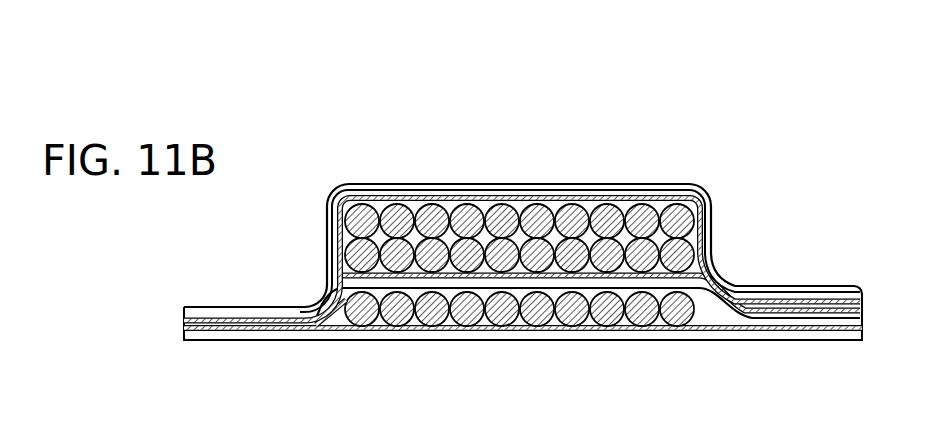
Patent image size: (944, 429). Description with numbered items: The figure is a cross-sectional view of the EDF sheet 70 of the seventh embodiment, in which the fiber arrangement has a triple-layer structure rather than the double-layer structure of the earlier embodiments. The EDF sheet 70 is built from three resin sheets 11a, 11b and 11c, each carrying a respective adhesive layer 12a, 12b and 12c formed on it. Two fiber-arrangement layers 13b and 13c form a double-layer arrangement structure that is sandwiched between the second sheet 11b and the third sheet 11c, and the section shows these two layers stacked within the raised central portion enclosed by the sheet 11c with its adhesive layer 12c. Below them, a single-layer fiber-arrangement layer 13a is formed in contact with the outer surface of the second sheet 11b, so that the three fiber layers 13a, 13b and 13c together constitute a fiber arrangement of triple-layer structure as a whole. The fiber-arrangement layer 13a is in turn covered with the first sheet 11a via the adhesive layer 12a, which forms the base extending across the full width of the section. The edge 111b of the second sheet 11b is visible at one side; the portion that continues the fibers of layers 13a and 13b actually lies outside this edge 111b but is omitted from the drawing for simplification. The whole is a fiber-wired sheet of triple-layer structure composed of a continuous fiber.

The EDF sheet 70 is at (720, 86).
The resin sheet 11a is at (355, 340).
The resin sheet 11b is at (807, 332).
The resin sheet 11c is at (712, 224).
The edge of second sheet 111b is at (340, 276).
The adhesive layer 12a is at (283, 333).
The adhesive layer 12b is at (757, 332).
The adhesive layer 12c is at (665, 197).
The fiber-arrangement layer 13a is at (643, 326).
The fiber-arrangement layer 13b is at (698, 255).
The fiber-arrangement layer 13c is at (424, 202).